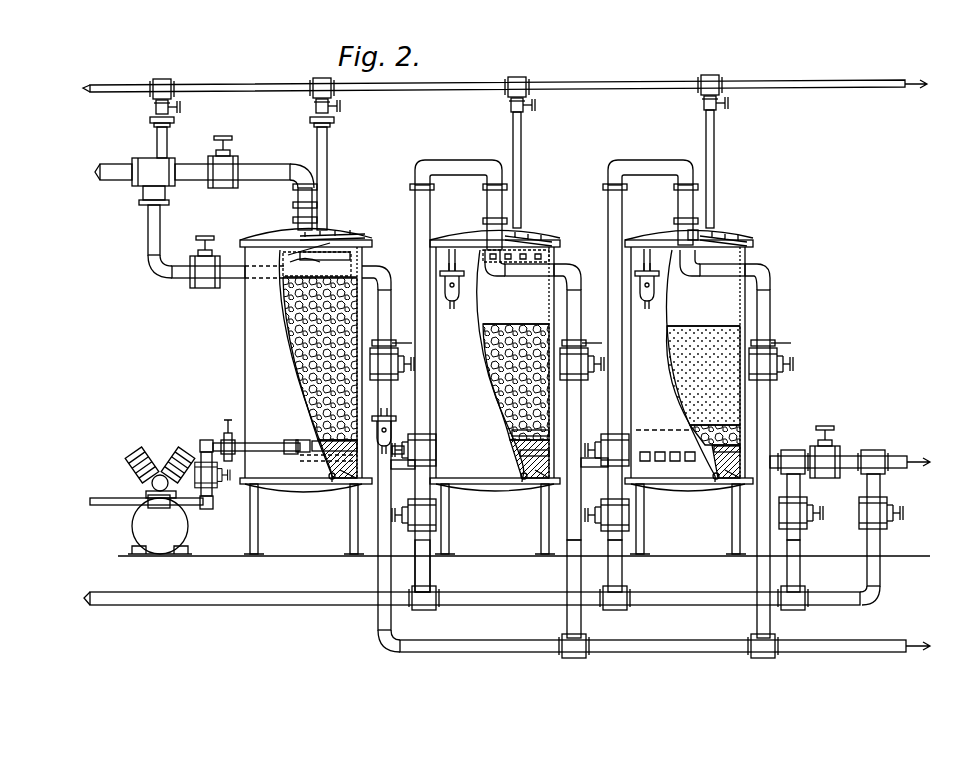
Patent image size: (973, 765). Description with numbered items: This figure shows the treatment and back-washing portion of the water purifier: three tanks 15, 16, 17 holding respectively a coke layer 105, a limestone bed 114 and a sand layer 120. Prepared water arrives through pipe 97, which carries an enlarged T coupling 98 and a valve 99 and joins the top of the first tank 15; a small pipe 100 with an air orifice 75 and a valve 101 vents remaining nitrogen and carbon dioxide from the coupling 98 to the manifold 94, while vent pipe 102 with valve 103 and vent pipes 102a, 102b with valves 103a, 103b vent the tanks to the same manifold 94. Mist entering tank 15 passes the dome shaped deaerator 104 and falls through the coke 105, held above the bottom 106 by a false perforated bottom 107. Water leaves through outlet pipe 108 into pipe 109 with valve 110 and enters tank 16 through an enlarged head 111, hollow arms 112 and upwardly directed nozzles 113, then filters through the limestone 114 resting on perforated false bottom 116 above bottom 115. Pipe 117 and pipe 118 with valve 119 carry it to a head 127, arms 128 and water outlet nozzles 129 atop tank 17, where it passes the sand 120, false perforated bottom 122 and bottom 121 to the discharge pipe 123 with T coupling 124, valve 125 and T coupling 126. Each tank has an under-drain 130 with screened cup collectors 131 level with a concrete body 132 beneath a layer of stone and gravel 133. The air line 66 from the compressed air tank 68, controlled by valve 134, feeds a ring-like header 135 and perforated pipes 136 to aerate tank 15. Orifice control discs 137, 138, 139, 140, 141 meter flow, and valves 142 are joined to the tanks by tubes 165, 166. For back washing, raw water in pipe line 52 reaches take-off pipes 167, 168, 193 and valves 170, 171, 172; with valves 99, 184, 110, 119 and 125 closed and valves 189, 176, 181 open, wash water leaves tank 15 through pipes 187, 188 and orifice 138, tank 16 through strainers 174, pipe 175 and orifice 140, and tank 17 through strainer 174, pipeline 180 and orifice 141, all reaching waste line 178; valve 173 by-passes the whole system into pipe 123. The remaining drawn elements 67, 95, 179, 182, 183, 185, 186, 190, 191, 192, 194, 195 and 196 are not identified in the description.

The first treatment tank 15 is at (348, 234).
The second tank 16 is at (528, 234).
The third tank 17 is at (712, 234).
The back-wash pipe line 52 is at (90, 604).
The air supply pipe line 66 is at (90, 502).
The air compressor 67 is at (160, 472).
The compressed air tank 68 is at (132, 530).
The air orifice 75 is at (150, 123).
The manifold 94 is at (90, 90).
The header outlet 95 is at (920, 95).
The pipe 97 is at (100, 175).
The enlarged T coupling 98 is at (142, 158).
The valve 99 is at (228, 190).
The small diameter pipe 100 is at (167, 132).
The valve 101 is at (156, 110).
The vent pipe 102 is at (327, 157).
The vent pipe 102a is at (521, 153).
The vent pipe 102b is at (714, 138).
The valve 103 is at (316, 108).
The valve 103a is at (511, 107).
The valve 103b is at (704, 105).
The dome shaped deaerator 104 is at (362, 232).
The layer of coke 105 is at (282, 320).
The bottom of tank 106 is at (290, 488).
The false perforated bottom 107 is at (310, 438).
The outlet pipe 108 is at (400, 470).
The pipe 109 is at (486, 200).
The valve 110 is at (436, 444).
The enlarged head 111 is at (490, 236).
The hollow pipes or arms 112 is at (516, 257).
The nozzles 113 is at (540, 238).
The limestone bed 114 is at (513, 366).
The bottom of tank 115 is at (505, 490).
The perforated false bottom 116 is at (518, 434).
The pipe 117 is at (592, 468).
The pipe 118 is at (608, 196).
The valve 119 is at (604, 436).
The layer of sand 120 is at (703, 366).
The bottom of tank 121 is at (690, 488).
The false perforated bottom 122 is at (690, 432).
The water discharge outlet pipe 123 is at (788, 456).
The T coupling 124 is at (800, 478).
The valve 125 is at (842, 438).
The T coupling 126 is at (875, 450).
The enlarged head 127 is at (698, 232).
The hollow pipes or arms 128 is at (722, 261).
The water outlet nozzles 129 is at (728, 238).
The under-drains 130 is at (360, 480).
The screened hollow cup collectors 131 is at (345, 476).
The body of solid concrete 132 is at (332, 480).
The layer of stone and gravel 133 is at (520, 455).
The valve 134 is at (212, 484).
The ring-like hollow header 135 is at (334, 436).
The perforated pipes 136 is at (304, 458).
The orifice control disc 137 is at (140, 205).
The orifice control disc 138 is at (292, 206).
The orifice control disc 139 is at (226, 432).
The orifice control disc 140 is at (580, 343).
The orifice control disc 141 is at (774, 343).
The valve 142 is at (400, 402).
The hollow pipe or tube 165 is at (396, 450).
The top tube or pipe 166 is at (318, 398).
The take-off pipe 167 is at (431, 576).
The take-off pipe 168 is at (622, 576).
The valve 170 is at (436, 514).
The valve 171 is at (628, 516).
The valve 172 is at (804, 520).
The valve 173 is at (886, 506).
The strainers 174 is at (596, 278).
The pipe 175 is at (567, 576).
The valve 176 is at (582, 384).
The waste line 178 is at (428, 652).
The outlet 179 is at (908, 652).
The pipeline 180 is at (760, 266).
The valve 181 is at (790, 360).
The tee 182 is at (763, 658).
The pipe 183 is at (146, 244).
The valve 184 is at (195, 284).
The chamber 185 is at (283, 260).
The baffle 186 is at (290, 250).
The pipe 187 is at (378, 264).
The pipe 188 is at (395, 282).
The valve 189 is at (400, 372).
The elbow 190 is at (378, 644).
The tee 191 is at (424, 611).
The tee 192 is at (615, 611).
The take-off pipe 193 is at (800, 560).
The pipe 194 is at (880, 560).
The tee 195 is at (793, 611).
The elbow 196 is at (878, 600).